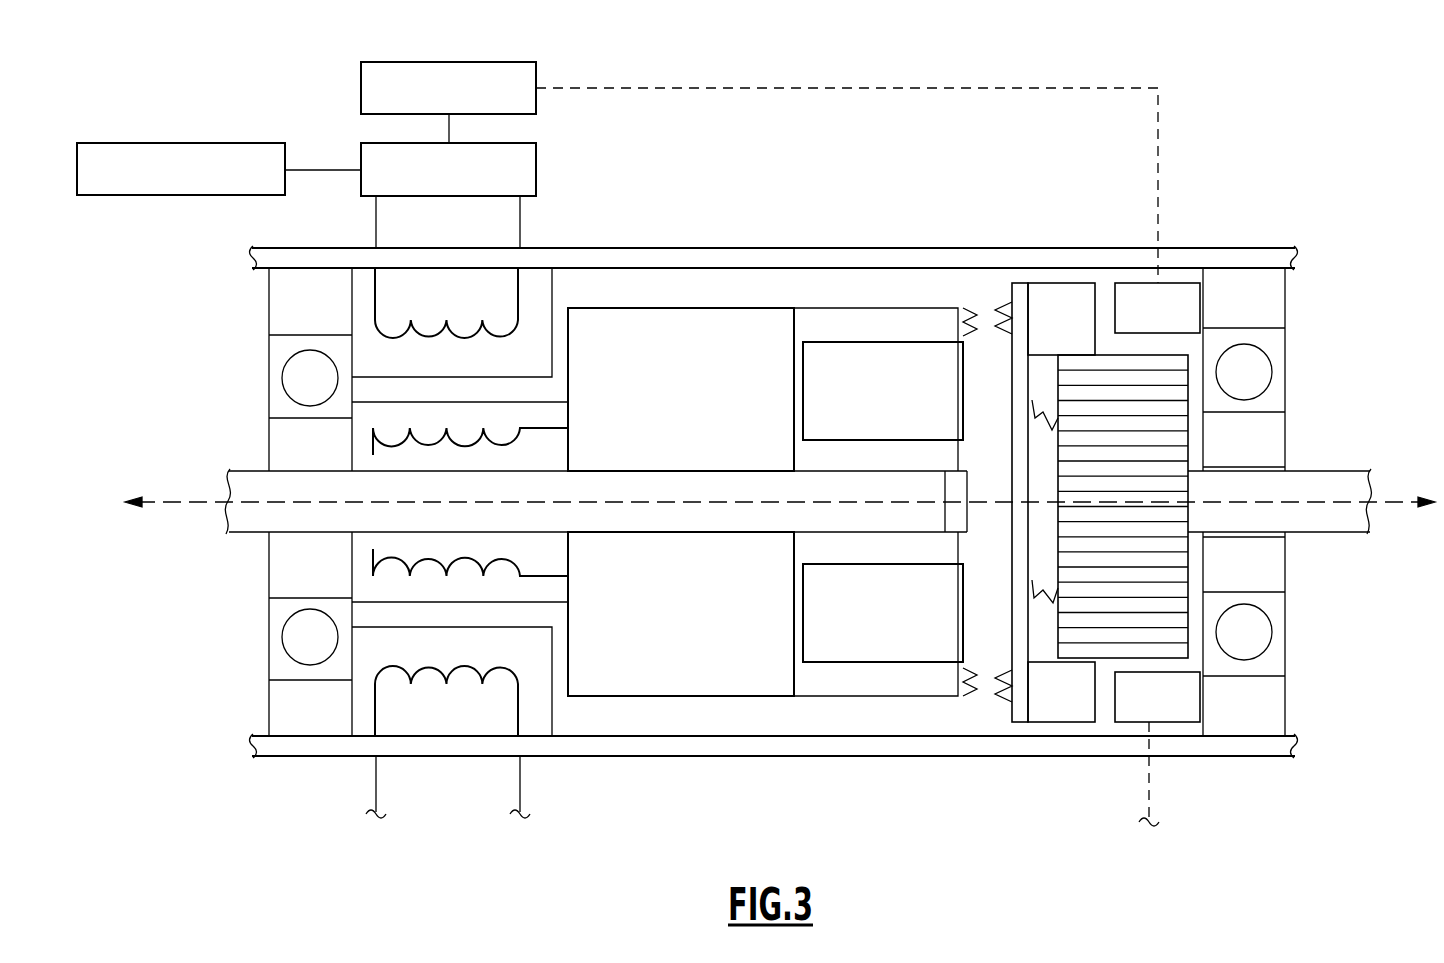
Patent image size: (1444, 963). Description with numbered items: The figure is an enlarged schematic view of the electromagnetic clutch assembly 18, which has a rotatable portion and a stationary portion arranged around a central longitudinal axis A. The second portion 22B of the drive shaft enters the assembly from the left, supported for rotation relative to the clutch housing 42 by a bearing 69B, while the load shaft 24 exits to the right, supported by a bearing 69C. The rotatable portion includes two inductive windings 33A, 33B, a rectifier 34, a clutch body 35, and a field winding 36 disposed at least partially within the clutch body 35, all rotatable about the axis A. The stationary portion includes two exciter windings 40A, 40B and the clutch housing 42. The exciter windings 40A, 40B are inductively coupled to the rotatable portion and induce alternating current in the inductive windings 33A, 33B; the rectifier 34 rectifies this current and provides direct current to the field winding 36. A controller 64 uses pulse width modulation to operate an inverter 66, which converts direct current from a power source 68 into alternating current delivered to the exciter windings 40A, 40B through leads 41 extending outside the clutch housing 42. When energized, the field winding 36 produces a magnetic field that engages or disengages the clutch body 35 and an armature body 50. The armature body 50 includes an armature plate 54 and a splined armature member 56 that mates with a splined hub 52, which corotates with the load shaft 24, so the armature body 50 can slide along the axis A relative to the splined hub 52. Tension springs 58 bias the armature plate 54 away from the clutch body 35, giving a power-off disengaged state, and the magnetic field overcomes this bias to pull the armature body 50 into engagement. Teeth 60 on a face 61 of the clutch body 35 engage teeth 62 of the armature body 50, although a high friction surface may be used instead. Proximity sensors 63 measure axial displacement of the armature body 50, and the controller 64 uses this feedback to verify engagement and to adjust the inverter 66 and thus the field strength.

The electromagnetic clutch assembly 18 is at (1250, 72).
The second portion of the drive shaft 22B is at (262, 518).
The load shaft 24 is at (1340, 478).
The inductive winding 33A is at (466, 425).
The inductive winding 33B is at (466, 582).
The rectifier 34 is at (700, 426).
The clutch body 35 is at (817, 325).
The field winding 36 is at (896, 432).
The exciter winding 40A is at (460, 322).
The exciter winding 40B is at (460, 684).
The leads 41 is at (377, 232).
The clutch housing 42 is at (767, 261).
The armature body 50 is at (1038, 272).
The splined hub 52 is at (1190, 607).
The armature plate 54 is at (1020, 295).
The splined armature member 56 is at (1077, 334).
The spring 58 is at (1032, 400).
The teeth 60 is at (972, 306).
The face 61 is at (942, 317).
The teeth 62 is at (997, 300).
The proximity sensor 63 is at (1180, 283).
The controller 64 is at (376, 62).
The inverter 66 is at (537, 175).
The power source 68 is at (115, 143).
The bearing 69B is at (240, 348).
The bearing 69C is at (1298, 362).
The central longitudinal axis A is at (178, 502).